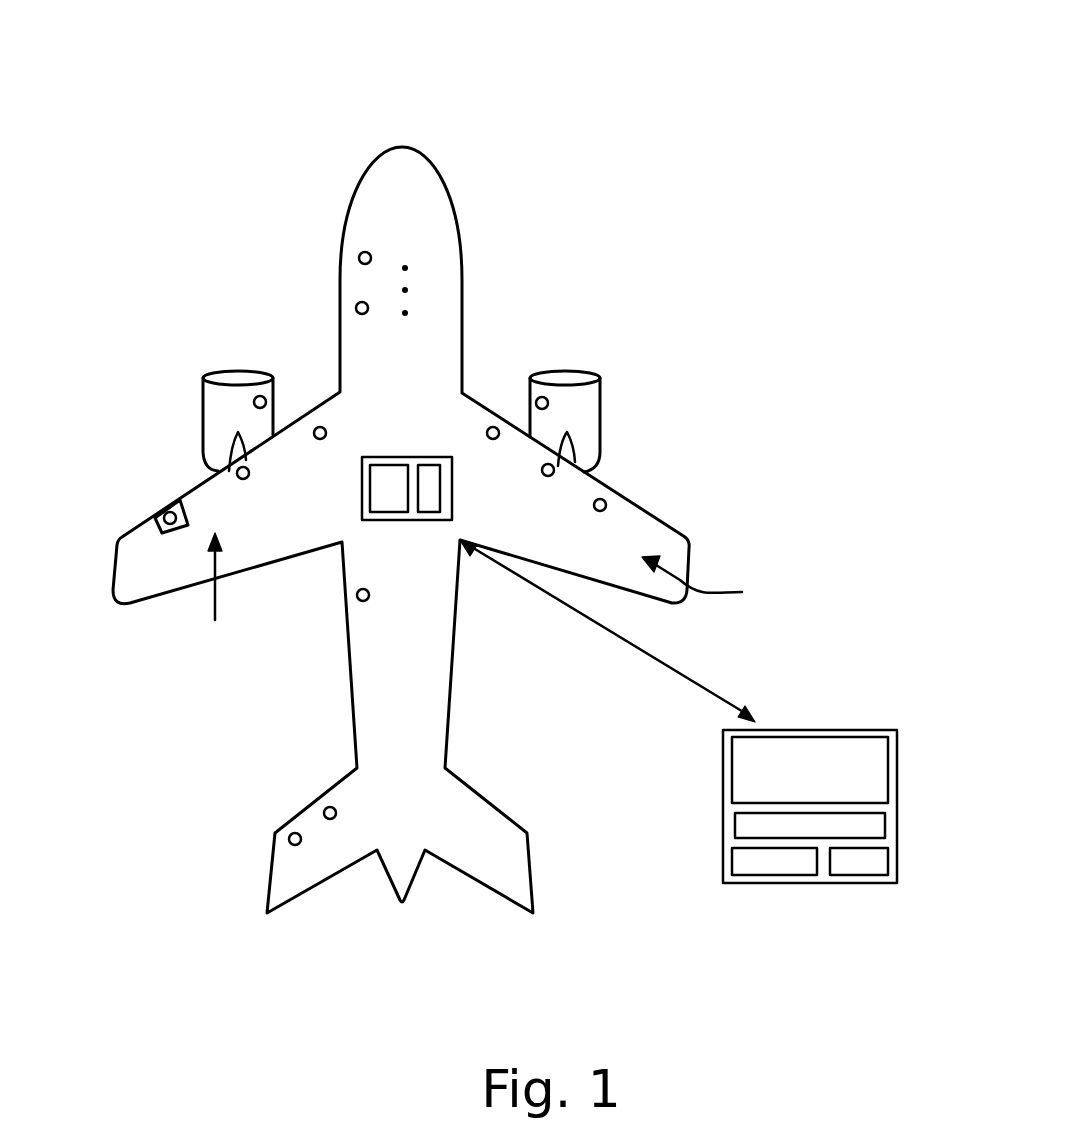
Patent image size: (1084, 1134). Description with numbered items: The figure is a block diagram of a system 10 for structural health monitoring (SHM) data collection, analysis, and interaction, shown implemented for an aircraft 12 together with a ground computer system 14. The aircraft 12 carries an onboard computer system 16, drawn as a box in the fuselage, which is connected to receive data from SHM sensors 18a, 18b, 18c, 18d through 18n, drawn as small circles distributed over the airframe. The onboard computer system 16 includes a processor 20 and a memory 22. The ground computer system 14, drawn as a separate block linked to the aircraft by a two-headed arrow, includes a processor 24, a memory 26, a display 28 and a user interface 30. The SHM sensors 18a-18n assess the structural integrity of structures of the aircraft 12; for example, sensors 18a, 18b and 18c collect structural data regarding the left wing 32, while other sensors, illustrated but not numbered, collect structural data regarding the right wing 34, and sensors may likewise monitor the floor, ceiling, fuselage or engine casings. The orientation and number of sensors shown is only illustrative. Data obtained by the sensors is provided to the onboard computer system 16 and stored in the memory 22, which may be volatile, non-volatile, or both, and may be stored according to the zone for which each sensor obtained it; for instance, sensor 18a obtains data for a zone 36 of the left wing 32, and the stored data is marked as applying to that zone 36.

The system 10 is at (491, 479).
The aircraft 12 is at (418, 128).
The ground computer system 14 is at (822, 730).
The onboard computer system 16 is at (397, 458).
The SHM sensor 18a is at (162, 510).
The SHM sensor 18b is at (243, 479).
The SHM sensor 18c is at (320, 439).
The SHM sensor 18d is at (366, 314).
The SHM sensor 18n is at (369, 252).
The processor 20 is at (388, 500).
The memory 22 is at (428, 500).
The processor 24 is at (860, 868).
The memory 26 is at (772, 874).
The display 28 is at (810, 770).
The user interface 30 is at (735, 828).
The left wing 32 is at (210, 586).
The right wing 34 is at (706, 580).
The zone 36 is at (186, 500).